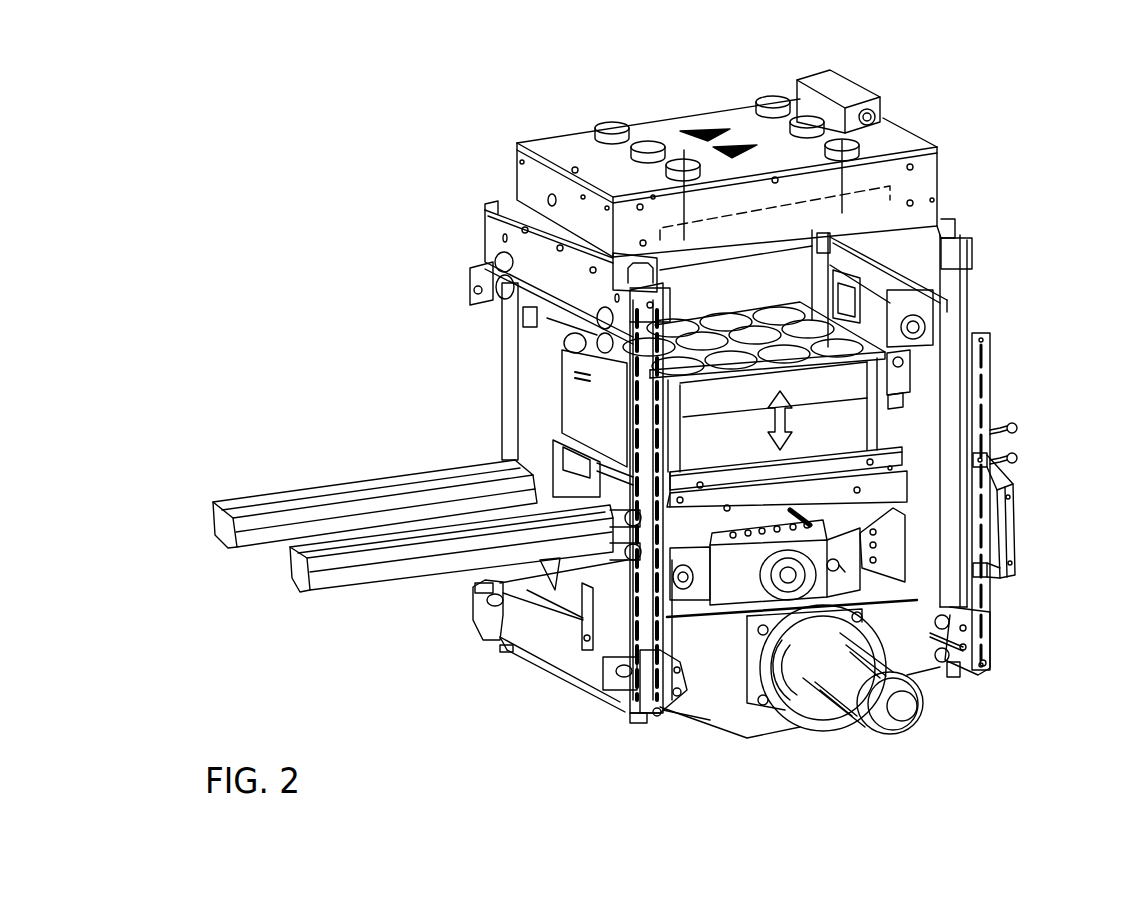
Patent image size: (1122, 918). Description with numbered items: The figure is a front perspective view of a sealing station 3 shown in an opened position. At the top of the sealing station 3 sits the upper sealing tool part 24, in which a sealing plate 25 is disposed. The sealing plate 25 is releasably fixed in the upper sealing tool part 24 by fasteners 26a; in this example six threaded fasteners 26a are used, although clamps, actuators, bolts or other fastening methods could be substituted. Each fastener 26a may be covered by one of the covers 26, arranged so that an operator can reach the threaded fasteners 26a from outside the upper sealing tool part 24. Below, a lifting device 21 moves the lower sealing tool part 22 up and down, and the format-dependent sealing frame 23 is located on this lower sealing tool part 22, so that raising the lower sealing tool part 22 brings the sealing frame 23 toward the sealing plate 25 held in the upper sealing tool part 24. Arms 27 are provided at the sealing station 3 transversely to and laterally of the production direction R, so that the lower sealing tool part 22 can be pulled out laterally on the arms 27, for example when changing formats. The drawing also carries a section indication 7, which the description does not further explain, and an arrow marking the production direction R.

The sealing station 3 is at (376, 91).
The section line VII-VII 7 is at (447, 192).
The production direction R is at (892, 73).
The lifting device 21 is at (945, 706).
The lower sealing tool part 22 is at (850, 430).
The sealing frame 23 is at (848, 375).
The upper sealing tool part 24 is at (945, 175).
The sealing plate 25 is at (763, 250).
The covers 26 is at (613, 127).
The fastener 26a is at (838, 174).
The arms 27 is at (283, 490).